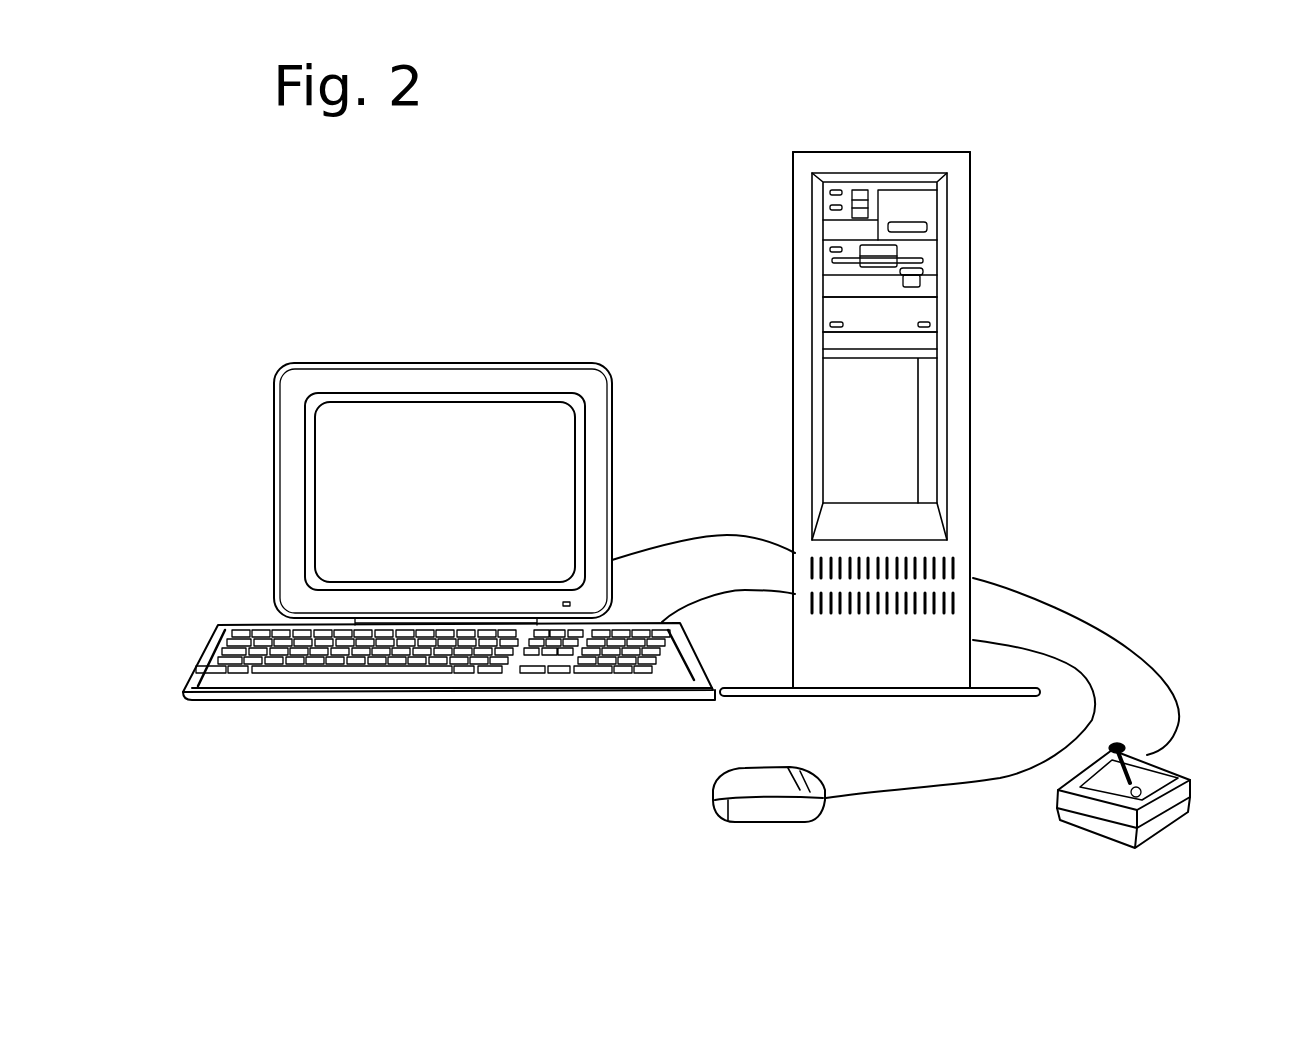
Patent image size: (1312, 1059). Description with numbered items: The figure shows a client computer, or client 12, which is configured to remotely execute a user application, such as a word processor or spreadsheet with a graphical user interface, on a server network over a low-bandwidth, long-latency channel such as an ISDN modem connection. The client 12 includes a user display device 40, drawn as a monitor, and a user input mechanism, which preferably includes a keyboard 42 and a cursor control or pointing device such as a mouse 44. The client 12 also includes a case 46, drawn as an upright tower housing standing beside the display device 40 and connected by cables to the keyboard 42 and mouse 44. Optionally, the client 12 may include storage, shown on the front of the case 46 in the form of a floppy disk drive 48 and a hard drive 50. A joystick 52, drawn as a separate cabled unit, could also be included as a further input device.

The client computer 12 is at (587, 232).
The user display device 40 is at (442, 362).
The keyboard 42 is at (380, 698).
The mouse 44 is at (826, 792).
The case 46 is at (970, 440).
The floppy disk drive 48 is at (925, 250).
The hard drive 50 is at (923, 310).
The joystick 52 is at (1185, 775).